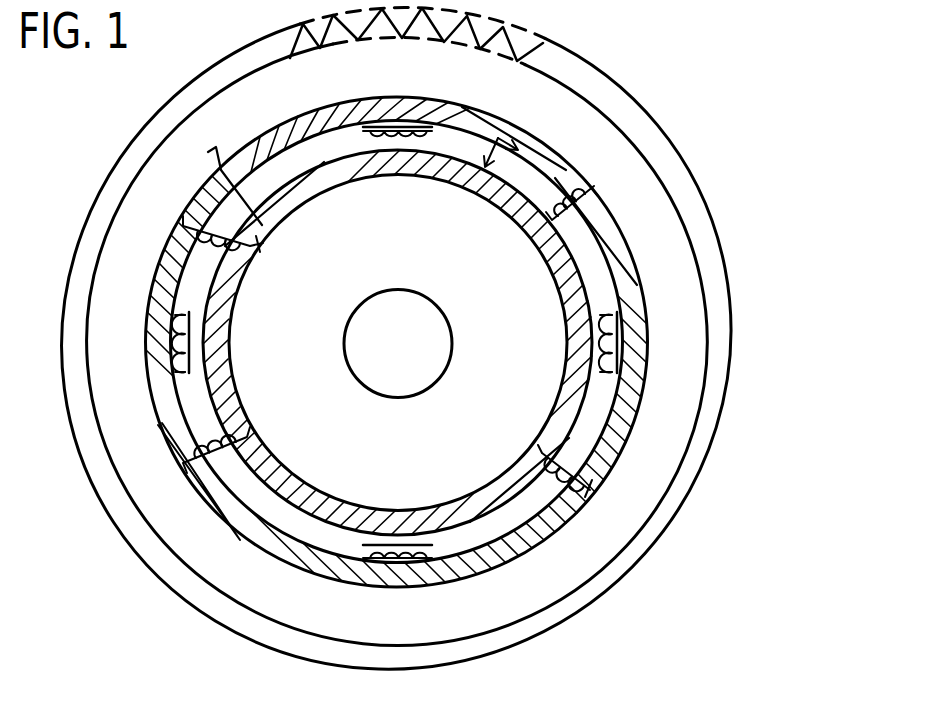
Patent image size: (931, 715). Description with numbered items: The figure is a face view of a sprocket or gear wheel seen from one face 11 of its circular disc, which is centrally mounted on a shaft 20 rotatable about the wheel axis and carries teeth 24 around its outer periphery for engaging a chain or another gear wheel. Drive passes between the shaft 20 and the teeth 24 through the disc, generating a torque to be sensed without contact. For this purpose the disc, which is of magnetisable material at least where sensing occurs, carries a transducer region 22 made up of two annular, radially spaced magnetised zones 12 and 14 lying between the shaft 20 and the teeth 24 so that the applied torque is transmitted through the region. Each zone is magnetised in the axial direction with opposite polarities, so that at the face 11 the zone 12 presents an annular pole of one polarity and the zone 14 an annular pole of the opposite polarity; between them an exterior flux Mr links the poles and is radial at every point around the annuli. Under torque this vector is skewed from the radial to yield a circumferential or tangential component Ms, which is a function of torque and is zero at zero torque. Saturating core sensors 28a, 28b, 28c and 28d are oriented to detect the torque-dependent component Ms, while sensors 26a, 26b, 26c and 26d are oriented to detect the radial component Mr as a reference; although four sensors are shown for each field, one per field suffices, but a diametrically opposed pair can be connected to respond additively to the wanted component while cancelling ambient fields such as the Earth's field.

The face 11 is at (771, 239).
The magnetised zone 12 is at (283, 125).
The magnetised zone 14 is at (346, 178).
The shaft 20 is at (428, 339).
The transducer region 22 is at (200, 197).
The teeth 24 is at (566, 51).
The sensor 26a is at (575, 222).
The sensor 26b is at (212, 436).
The sensor 26c is at (200, 230).
The sensor 26d is at (572, 462).
The sensor 28a is at (398, 142).
The sensor 28b is at (398, 560).
The sensor 28c is at (172, 341).
The sensor 28d is at (618, 348).
The circumferential magnetic field component Ms is at (530, 159).
The radial magnetic field component Mr is at (481, 171).